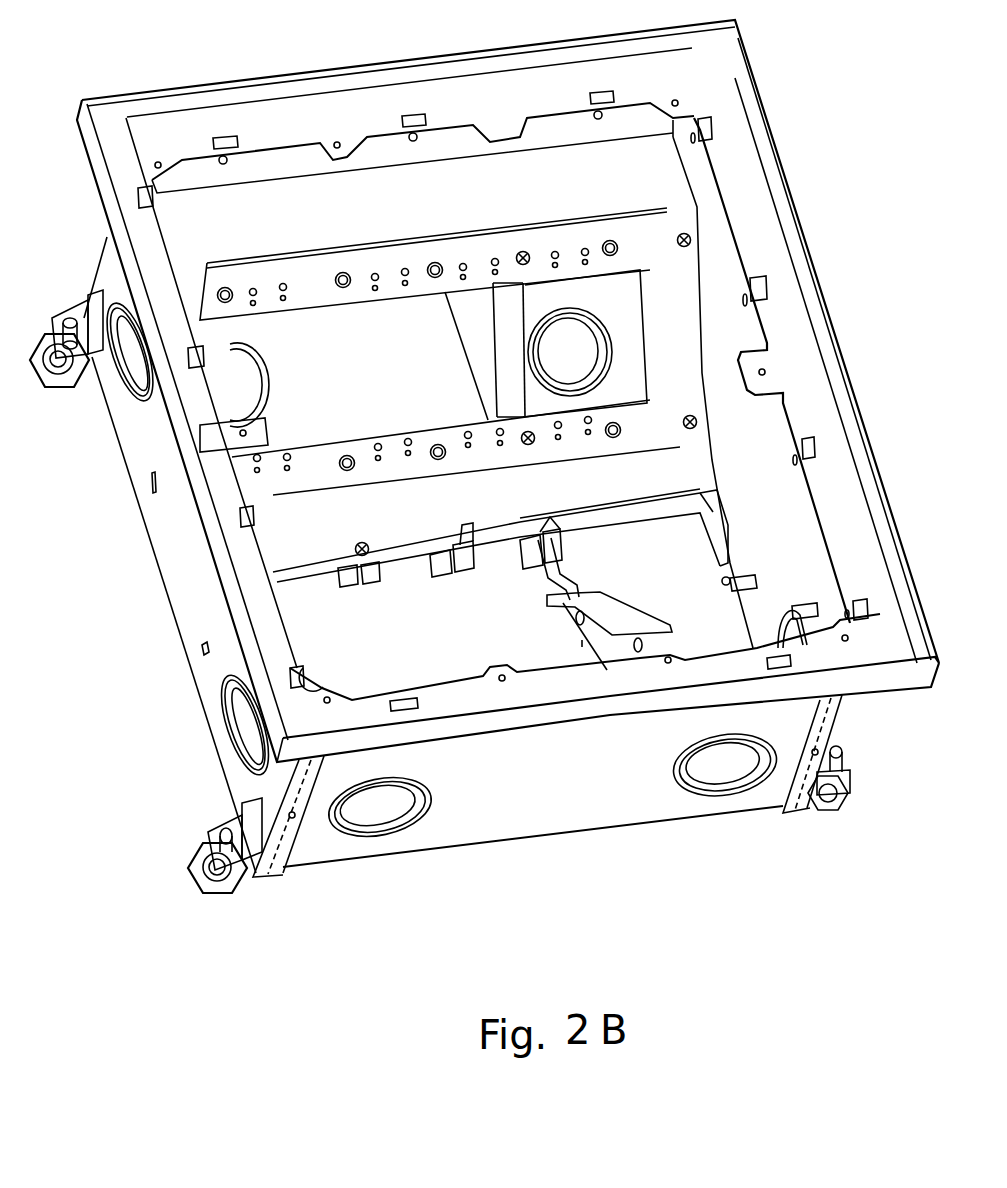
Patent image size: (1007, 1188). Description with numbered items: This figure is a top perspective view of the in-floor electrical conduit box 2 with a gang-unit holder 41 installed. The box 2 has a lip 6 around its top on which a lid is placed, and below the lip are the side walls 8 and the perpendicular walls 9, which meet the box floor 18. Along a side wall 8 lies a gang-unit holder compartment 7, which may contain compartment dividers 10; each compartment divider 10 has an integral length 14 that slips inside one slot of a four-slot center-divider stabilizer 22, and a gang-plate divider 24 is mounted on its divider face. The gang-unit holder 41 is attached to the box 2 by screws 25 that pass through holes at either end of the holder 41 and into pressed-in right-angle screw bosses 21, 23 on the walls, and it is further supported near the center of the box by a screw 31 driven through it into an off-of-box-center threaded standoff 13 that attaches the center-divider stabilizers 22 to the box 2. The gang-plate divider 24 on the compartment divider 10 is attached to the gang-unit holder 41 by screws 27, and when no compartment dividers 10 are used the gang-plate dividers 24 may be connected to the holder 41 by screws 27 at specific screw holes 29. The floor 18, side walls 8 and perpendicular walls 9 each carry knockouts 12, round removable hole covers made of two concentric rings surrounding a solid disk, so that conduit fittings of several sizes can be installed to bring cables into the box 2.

The in-floor electrical conduit box 2 is at (108, 237).
The lip 6 is at (467, 63).
The gang-unit holder compartment 7 is at (381, 400).
The side wall 8 is at (550, 808).
The perpendicular wall 9 is at (138, 568).
The compartment divider 10 is at (469, 356).
The knockout 12 is at (138, 385).
The off-of-box-center threaded standoff 13 is at (572, 520).
The integral length 14 is at (564, 569).
The box floor 18 is at (540, 459).
The pressed-in right-angle screw boss 21 is at (814, 612).
The center-divider stabilizer 22 is at (365, 585).
The pressed-in right-angle screw boss 23 is at (755, 578).
The gang-plate divider 24 is at (648, 620).
The screw 25 is at (684, 233).
The screw 27 is at (538, 462).
The screw hole 29 is at (222, 290).
The screw 31 is at (368, 546).
The gang-unit holder 41 is at (423, 147).